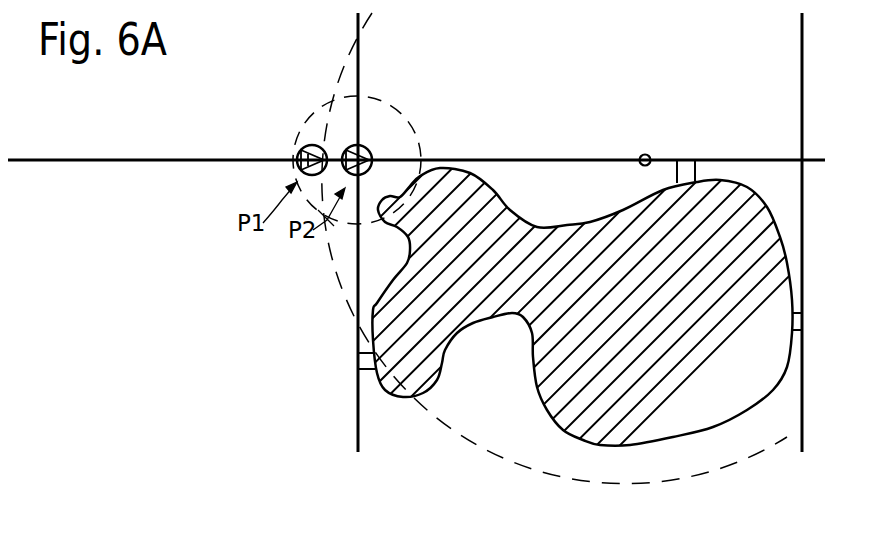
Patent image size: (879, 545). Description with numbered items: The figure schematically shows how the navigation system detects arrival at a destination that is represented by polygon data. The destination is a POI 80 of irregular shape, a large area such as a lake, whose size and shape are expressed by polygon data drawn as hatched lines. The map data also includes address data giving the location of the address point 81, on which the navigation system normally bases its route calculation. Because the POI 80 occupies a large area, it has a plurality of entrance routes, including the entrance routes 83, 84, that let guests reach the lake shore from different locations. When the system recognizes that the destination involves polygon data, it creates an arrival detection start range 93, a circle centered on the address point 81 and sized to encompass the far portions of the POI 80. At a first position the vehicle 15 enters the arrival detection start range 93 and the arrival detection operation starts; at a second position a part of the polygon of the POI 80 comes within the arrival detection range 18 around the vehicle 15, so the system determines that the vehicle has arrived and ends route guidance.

The vehicle 15 is at (305, 148).
The arrival detection range 18 is at (405, 122).
The POI 80 is at (675, 436).
The address point 81 is at (648, 154).
The entrance route 84 is at (696, 160).
The entrance route 83 is at (361, 366).
The arrival detection start range 93 is at (482, 455).